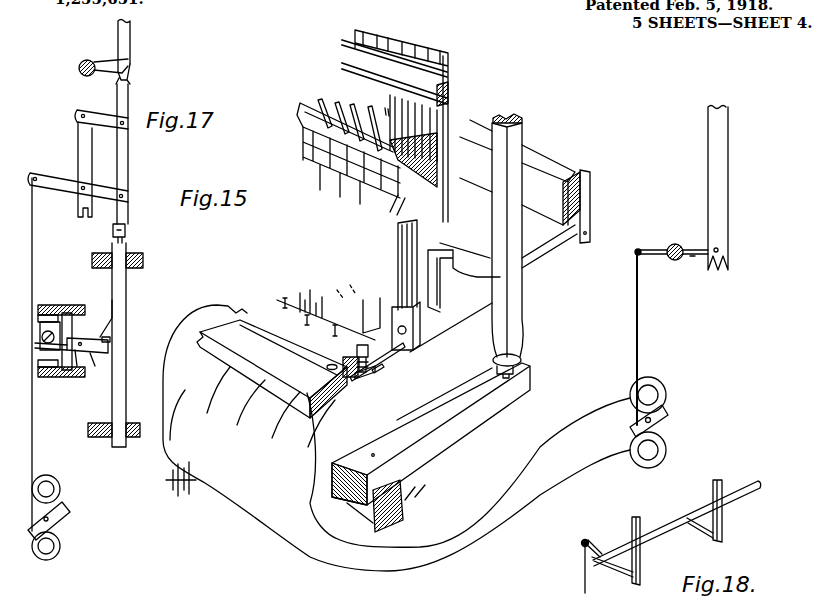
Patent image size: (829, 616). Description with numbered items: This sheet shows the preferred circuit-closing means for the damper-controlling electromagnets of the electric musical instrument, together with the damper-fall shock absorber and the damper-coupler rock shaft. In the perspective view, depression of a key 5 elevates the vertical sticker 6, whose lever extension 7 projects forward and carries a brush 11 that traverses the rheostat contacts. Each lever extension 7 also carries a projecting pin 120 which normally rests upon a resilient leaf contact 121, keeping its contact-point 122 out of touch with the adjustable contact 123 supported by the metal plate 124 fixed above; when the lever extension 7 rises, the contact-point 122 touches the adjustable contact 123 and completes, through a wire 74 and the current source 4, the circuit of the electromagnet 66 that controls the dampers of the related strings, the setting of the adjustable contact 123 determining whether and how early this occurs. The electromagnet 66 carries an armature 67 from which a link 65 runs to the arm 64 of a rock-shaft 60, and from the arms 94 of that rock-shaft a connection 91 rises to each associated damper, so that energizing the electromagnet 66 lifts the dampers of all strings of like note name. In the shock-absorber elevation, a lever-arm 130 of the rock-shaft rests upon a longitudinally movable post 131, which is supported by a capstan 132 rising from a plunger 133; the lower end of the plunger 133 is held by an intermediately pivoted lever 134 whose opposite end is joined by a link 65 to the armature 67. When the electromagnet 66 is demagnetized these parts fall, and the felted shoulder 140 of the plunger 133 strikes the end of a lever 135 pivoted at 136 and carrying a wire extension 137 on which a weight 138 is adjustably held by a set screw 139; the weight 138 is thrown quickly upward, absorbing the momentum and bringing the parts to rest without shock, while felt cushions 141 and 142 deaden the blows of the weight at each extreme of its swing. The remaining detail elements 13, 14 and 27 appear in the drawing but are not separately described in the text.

In FIG. 15, the current source 4 is at (172, 494).
In FIG. 15, the key 5 is at (485, 420).
In FIG. 15, the vertical sticker 6 is at (512, 312).
In FIG. 15, the lever extension 7 is at (460, 313).
In FIG. 15, the brush 11 is at (397, 267).
In FIG. 15, the tension rods 13 is at (395, 214).
In FIG. 15, the key slab 14 is at (410, 197).
In FIG. 15, the keys 27 is at (336, 94).
In FIG. 17, the rock-shaft 60 is at (80, 64).
In FIG. 15, the rock-shaft 60 is at (672, 262).
In FIG. 18, the rock-shaft 60 is at (664, 518).
In FIG. 15, the arm 64 is at (655, 248).
In FIG. 18, the arm 64 is at (603, 547).
In FIG. 17, the link 65 is at (33, 243).
In FIG. 15, the link 65 is at (640, 337).
In FIG. 18, the link 65 is at (580, 568).
In FIG. 17, the electromagnet 66 is at (61, 552).
In FIG. 15, the electromagnet 66 is at (667, 396).
In FIG. 17, the armature 67 is at (68, 513).
In FIG. 15, the armature 67 is at (667, 420).
In FIG. 15, the wire 74 is at (584, 412).
In FIG. 17, the connection 91 is at (131, 31).
In FIG. 15, the connection 91 is at (708, 162).
In FIG. 18, the connection 91 is at (726, 480).
In FIG. 17, the arm 94 is at (106, 61).
In FIG. 15, the arm 94 is at (694, 262).
In FIG. 15, the projecting pin 120 is at (392, 360).
In FIG. 15, the resilient leaf contact 121 is at (373, 377).
In FIG. 15, the contact-point 122 is at (359, 388).
In FIG. 15, the adjustable contact 123 is at (352, 290).
In FIG. 15, the metal plate 124 is at (257, 307).
In FIG. 17, the lever-arm 130 is at (131, 77).
In FIG. 17, the longitudinally movable post 131 is at (128, 170).
In FIG. 17, the capstan 132 is at (126, 231).
In FIG. 17, the plunger 133 is at (127, 296).
In FIG. 17, the intermediately pivoted lever 134 is at (57, 176).
In FIG. 17, the lever 135 is at (84, 368).
In FIG. 17, the pivot 136 is at (88, 336).
In FIG. 17, the wire extension 137 is at (73, 380).
In FIG. 17, the weight 138 is at (67, 318).
In FIG. 17, the set screw 139 is at (45, 378).
In FIG. 17, the shoulder 140 is at (112, 330).
In FIG. 17, the felt cushion 141 is at (45, 306).
In FIG. 17, the felt cushion 142 is at (62, 378).